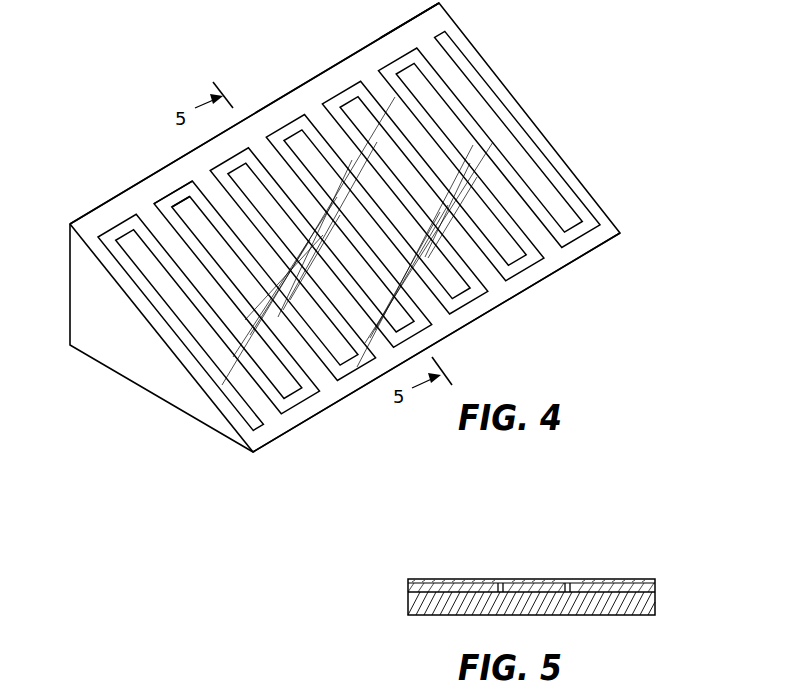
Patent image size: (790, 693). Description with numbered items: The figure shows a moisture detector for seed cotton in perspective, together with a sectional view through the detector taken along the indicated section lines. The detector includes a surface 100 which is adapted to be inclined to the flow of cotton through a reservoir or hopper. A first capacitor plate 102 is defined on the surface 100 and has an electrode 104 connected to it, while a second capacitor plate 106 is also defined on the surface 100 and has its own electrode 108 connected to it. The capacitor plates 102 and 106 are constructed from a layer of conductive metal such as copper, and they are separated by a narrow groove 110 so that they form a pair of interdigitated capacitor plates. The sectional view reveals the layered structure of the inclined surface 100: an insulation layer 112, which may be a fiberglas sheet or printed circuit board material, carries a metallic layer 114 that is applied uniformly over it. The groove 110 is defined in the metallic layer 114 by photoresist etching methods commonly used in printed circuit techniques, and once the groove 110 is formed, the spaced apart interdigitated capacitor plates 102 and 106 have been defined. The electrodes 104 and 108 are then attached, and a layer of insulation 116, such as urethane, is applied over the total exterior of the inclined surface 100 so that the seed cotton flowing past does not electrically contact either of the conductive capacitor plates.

In FIG. 4, the surface 100 is at (600, 251).
In FIG. 5, the surface 100 is at (394, 583).
In FIG. 4, the first capacitor plate 102 is at (333, 102).
In FIG. 4, the electrode 104 is at (122, 228).
In FIG. 4, the second capacitor plate 106 is at (486, 304).
In FIG. 4, the electrode 108 is at (423, 29).
In FIG. 4, the narrow groove 110 is at (176, 192).
In FIG. 5, the narrow groove 110 is at (500, 582).
In FIG. 5, the insulation layer 112 is at (408, 607).
In FIG. 5, the metallic layer 114 is at (657, 586).
In FIG. 5, the layer of insulation 116 is at (622, 579).